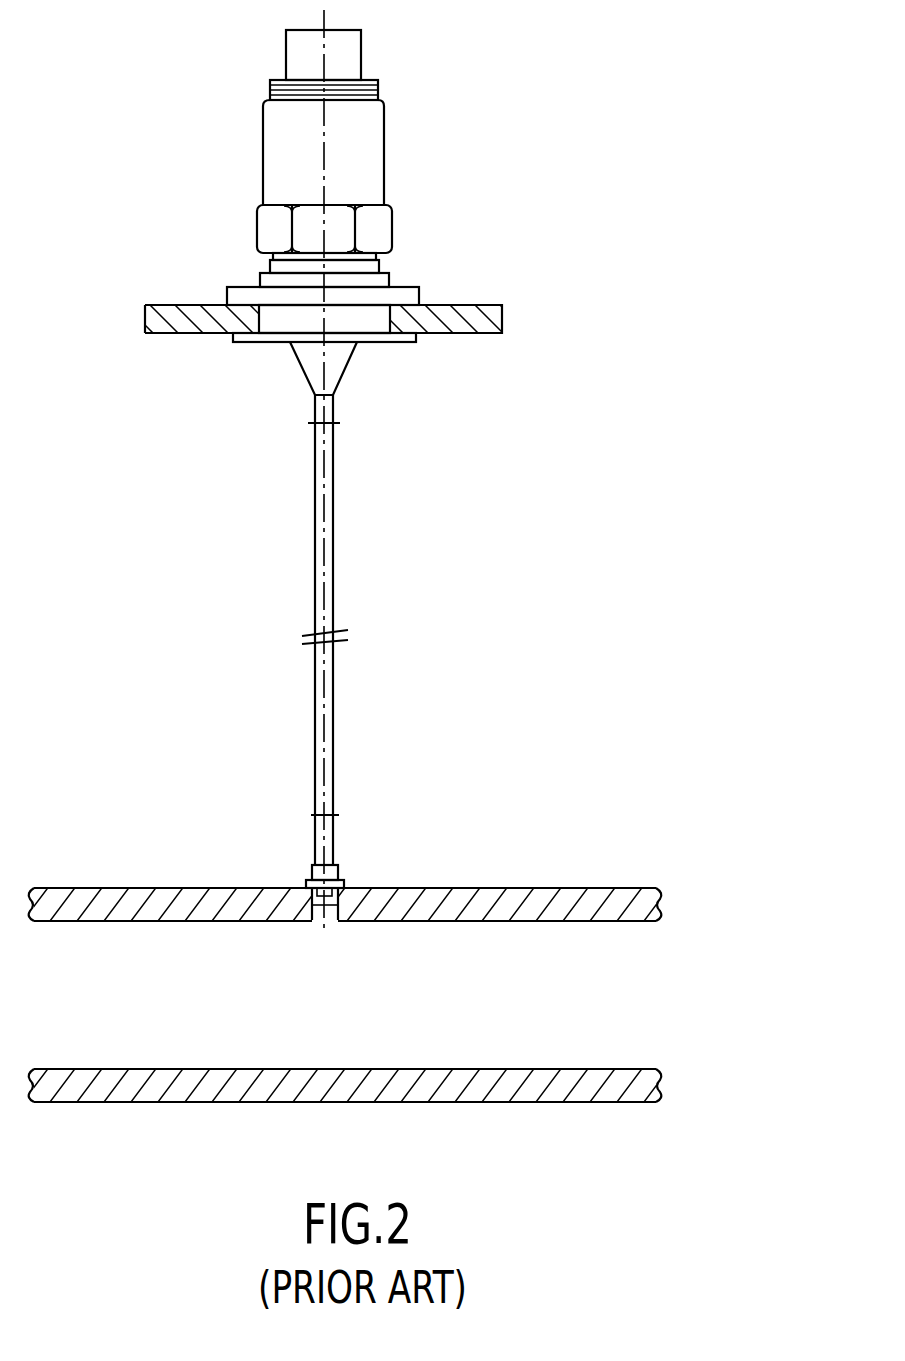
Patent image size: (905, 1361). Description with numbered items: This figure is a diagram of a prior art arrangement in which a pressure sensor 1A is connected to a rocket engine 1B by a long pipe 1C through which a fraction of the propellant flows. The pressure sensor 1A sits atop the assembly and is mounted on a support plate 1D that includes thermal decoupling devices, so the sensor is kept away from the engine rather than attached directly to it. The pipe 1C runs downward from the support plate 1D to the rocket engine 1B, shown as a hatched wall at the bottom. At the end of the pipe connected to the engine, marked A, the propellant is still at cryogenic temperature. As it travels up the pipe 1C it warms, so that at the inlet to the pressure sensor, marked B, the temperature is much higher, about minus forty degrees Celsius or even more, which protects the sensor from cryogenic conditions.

The pressure sensor 1A is at (366, 148).
The inlet to the pressure sensor B is at (324, 287).
The support plate 1D is at (477, 303).
The pipe 1C is at (329, 655).
The end of the pipe connected to the engine A is at (325, 887).
The rocket engine 1B is at (545, 895).